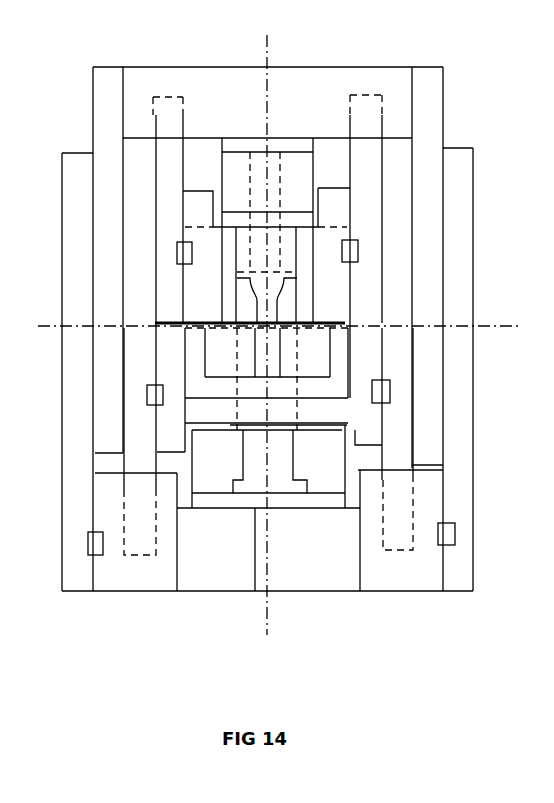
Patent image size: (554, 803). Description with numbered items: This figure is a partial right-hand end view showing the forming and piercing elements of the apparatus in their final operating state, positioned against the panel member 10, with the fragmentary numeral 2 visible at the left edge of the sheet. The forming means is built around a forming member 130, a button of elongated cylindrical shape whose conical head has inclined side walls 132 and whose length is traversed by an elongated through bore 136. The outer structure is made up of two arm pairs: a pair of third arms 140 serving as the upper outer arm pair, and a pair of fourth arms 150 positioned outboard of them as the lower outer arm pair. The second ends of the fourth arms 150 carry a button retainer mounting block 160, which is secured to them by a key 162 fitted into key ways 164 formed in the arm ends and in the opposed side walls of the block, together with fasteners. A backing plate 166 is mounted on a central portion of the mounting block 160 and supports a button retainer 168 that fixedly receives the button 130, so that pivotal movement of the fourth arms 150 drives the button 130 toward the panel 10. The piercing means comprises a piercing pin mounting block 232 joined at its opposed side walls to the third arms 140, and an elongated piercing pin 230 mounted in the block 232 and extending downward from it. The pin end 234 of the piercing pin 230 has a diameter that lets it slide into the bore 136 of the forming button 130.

The partial reference 2 is at (8, 371).
The panel member 10 is at (178, 323).
The forming member 130 is at (297, 451).
The inclined side walls 132 is at (280, 303).
The elongated through bore 136 is at (283, 425).
The third arms 140 is at (105, 100).
The fourth arms 150 is at (78, 170).
The button retainer mounting block 160 is at (363, 565).
The key 162 is at (445, 523).
The key ways 164 is at (436, 536).
The backing plate 166 is at (327, 500).
The button retainer 168 is at (328, 436).
The piercing pin 230 is at (283, 182).
The piercing pin mounting block 232 is at (239, 82).
The pin end 234 is at (280, 303).